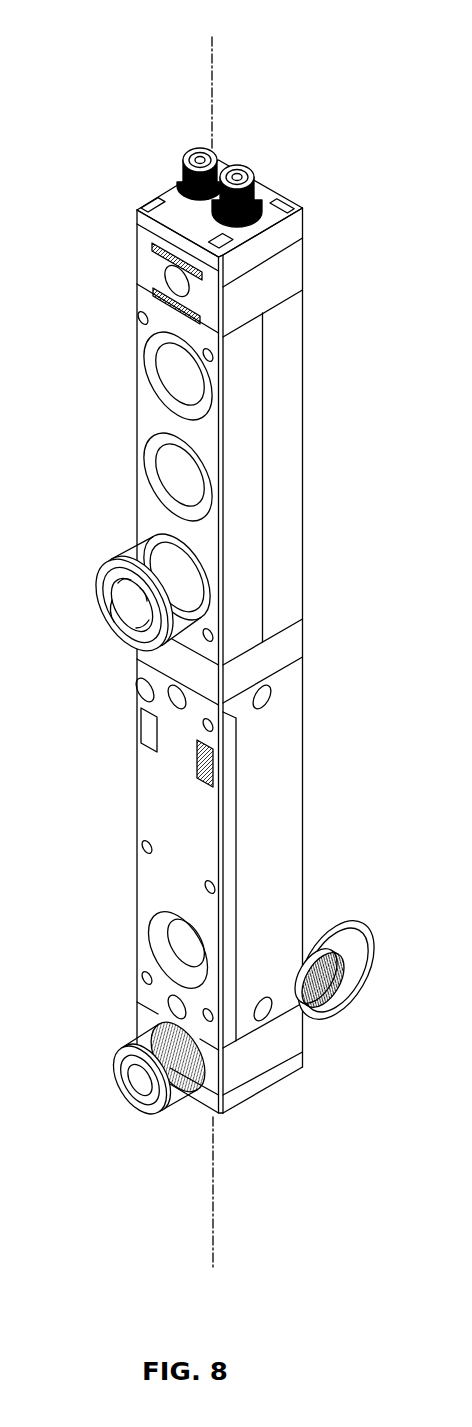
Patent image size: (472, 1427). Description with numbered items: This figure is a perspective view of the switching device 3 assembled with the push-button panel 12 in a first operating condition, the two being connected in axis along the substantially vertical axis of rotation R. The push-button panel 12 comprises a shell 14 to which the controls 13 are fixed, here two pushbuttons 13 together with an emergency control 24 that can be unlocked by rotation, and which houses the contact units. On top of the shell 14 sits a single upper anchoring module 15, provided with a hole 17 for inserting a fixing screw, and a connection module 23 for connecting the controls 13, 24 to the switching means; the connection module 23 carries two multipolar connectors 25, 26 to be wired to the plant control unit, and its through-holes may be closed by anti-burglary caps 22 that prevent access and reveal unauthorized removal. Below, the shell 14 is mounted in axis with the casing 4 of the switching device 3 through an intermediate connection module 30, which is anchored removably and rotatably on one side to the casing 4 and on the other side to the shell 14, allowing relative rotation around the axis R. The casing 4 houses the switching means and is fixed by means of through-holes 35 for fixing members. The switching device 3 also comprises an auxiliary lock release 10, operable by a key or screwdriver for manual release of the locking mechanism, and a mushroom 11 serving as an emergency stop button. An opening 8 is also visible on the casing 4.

The axis of rotation R is at (212, 60).
The push-button panel 12 is at (123, 193).
The connection module 23 is at (303, 230).
The upper anchoring module 15 is at (293, 272).
The anti-burglary caps 22 is at (293, 196).
The multipolar connector 25 is at (187, 153).
The multipolar connector 26 is at (262, 173).
The hole 17 is at (167, 277).
The shell 14 is at (285, 437).
The controls 13 is at (167, 477).
The emergency control 24 is at (103, 607).
The intermediate connection module 30 is at (290, 642).
The casing 4 is at (290, 793).
The through-holes 35 is at (145, 692).
The opening 8 is at (160, 950).
The mushroom 11 is at (373, 983).
The auxiliary lock release 10 is at (137, 1080).
The switching device 3 is at (293, 1090).